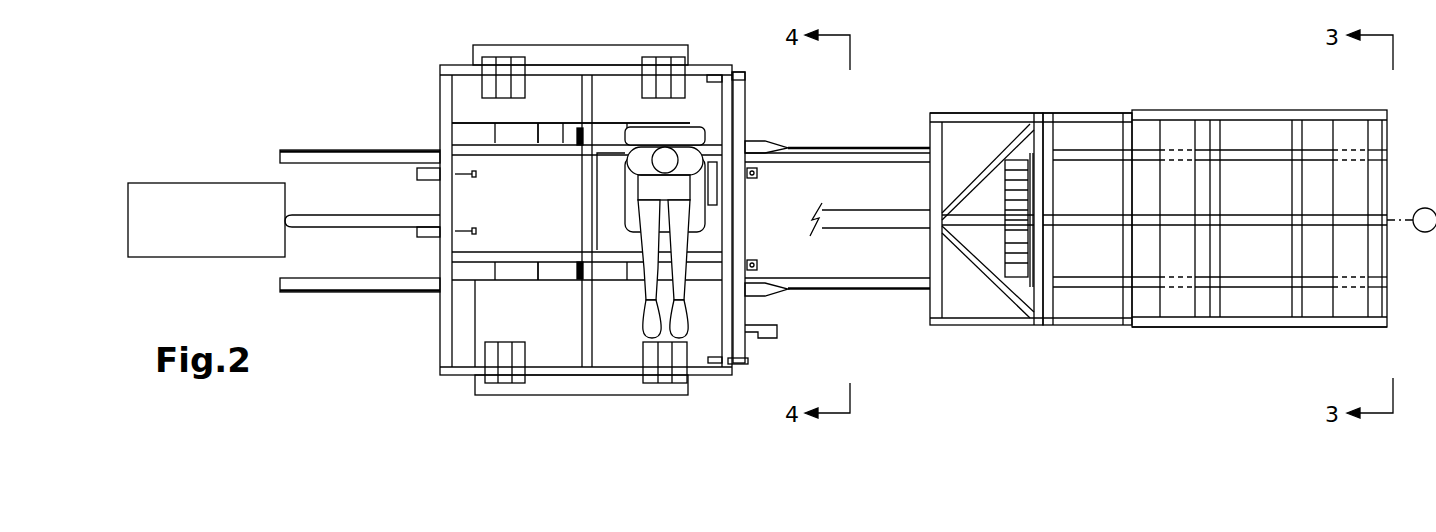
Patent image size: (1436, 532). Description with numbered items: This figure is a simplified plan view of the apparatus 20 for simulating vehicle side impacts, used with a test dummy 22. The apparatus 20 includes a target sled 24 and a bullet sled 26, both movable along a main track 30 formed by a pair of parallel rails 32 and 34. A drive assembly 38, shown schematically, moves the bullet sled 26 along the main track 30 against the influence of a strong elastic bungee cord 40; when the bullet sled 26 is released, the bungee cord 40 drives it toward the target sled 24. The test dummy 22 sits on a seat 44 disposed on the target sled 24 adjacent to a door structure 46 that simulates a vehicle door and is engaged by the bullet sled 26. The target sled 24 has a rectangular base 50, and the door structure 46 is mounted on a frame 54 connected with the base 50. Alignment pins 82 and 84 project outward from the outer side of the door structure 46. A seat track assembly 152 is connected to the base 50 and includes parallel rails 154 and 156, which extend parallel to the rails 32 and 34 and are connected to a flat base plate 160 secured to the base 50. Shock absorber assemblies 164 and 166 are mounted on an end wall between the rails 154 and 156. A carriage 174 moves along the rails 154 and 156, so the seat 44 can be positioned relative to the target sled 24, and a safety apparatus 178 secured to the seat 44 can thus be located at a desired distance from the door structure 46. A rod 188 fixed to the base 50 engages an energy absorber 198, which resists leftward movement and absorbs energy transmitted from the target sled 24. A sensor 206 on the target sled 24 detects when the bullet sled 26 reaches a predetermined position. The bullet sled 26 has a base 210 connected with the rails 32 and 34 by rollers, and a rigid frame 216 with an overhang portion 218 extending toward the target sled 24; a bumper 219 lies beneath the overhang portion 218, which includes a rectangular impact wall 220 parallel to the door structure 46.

The apparatus 20 is at (282, 76).
The test dummy 22 is at (650, 187).
The target sled 24 is at (434, 74).
The bullet sled 26 is at (1217, 104).
The main track 30 is at (313, 148).
The rail 32 is at (893, 148).
The rail 34 is at (868, 282).
The drive assembly 38 is at (1420, 208).
The bungee cord 40 is at (852, 218).
The seat 44 is at (641, 133).
The door structure 46 is at (750, 90).
The base 50 is at (565, 392).
The frame 54 is at (548, 72).
The alignment pin 82 is at (772, 292).
The alignment pin 84 is at (767, 147).
The seat track assembly 152 is at (512, 127).
The rail 154 is at (543, 148).
The rail 156 is at (560, 257).
The base plate 160 is at (563, 172).
The shock absorber assembly 164 is at (417, 172).
The shock absorber assembly 166 is at (418, 232).
The carriage 174 is at (606, 224).
The safety apparatus 178 is at (713, 193).
The rod 188 is at (347, 215).
The energy absorber 198 is at (222, 230).
The sensor 206 is at (761, 336).
The base 210 is at (1282, 328).
The frame 216 is at (1285, 152).
The overhang portion 218 is at (993, 113).
The bumper 219 is at (1017, 236).
The impact wall 220 is at (935, 118).